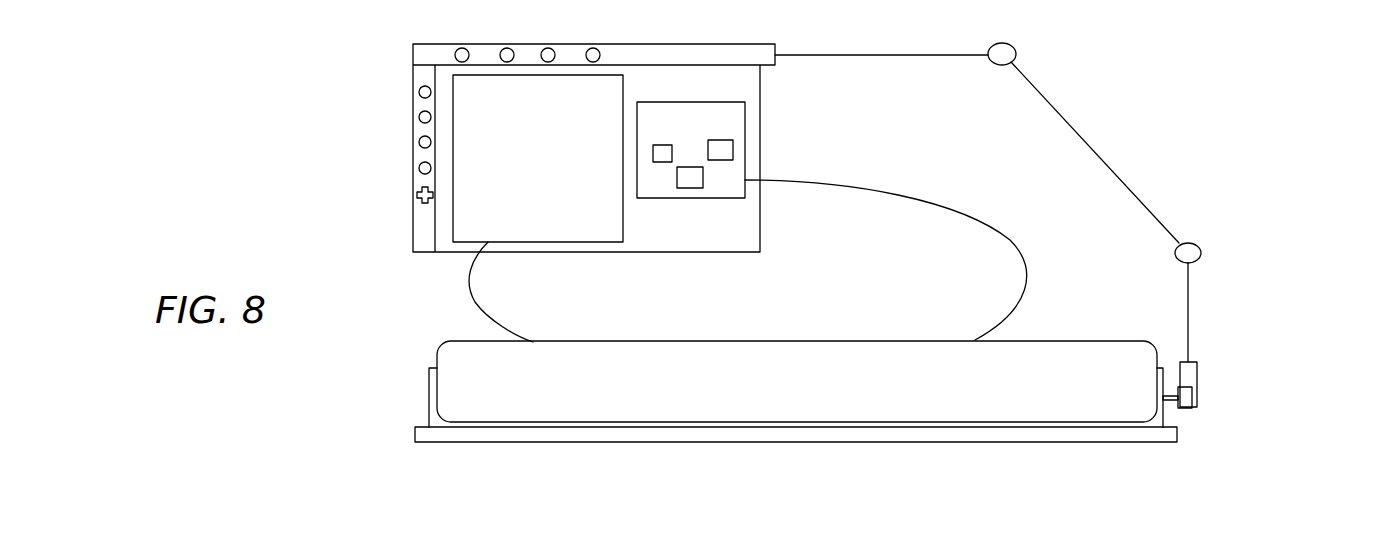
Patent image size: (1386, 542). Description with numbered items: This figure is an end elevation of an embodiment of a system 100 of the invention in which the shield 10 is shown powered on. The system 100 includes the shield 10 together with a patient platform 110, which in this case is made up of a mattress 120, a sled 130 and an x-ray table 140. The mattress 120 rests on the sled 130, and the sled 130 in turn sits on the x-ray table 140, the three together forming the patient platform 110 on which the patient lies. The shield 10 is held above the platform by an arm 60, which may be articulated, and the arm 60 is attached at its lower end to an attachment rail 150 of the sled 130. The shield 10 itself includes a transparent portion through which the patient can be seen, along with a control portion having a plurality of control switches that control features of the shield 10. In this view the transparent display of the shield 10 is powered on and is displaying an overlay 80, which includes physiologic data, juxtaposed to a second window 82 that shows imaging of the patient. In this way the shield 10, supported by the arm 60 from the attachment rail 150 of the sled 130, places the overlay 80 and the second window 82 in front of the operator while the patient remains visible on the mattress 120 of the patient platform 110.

The shield 10 is at (392, 148).
The arm 60 is at (1073, 130).
The overlay 80 is at (745, 145).
The second window 82 is at (623, 97).
The system 100 is at (1218, 188).
The patient platform 110 is at (424, 473).
The mattress 120 is at (455, 358).
The sled 130 is at (430, 418).
The x-ray table 140 is at (472, 442).
The attachment rail 150 is at (1186, 404).